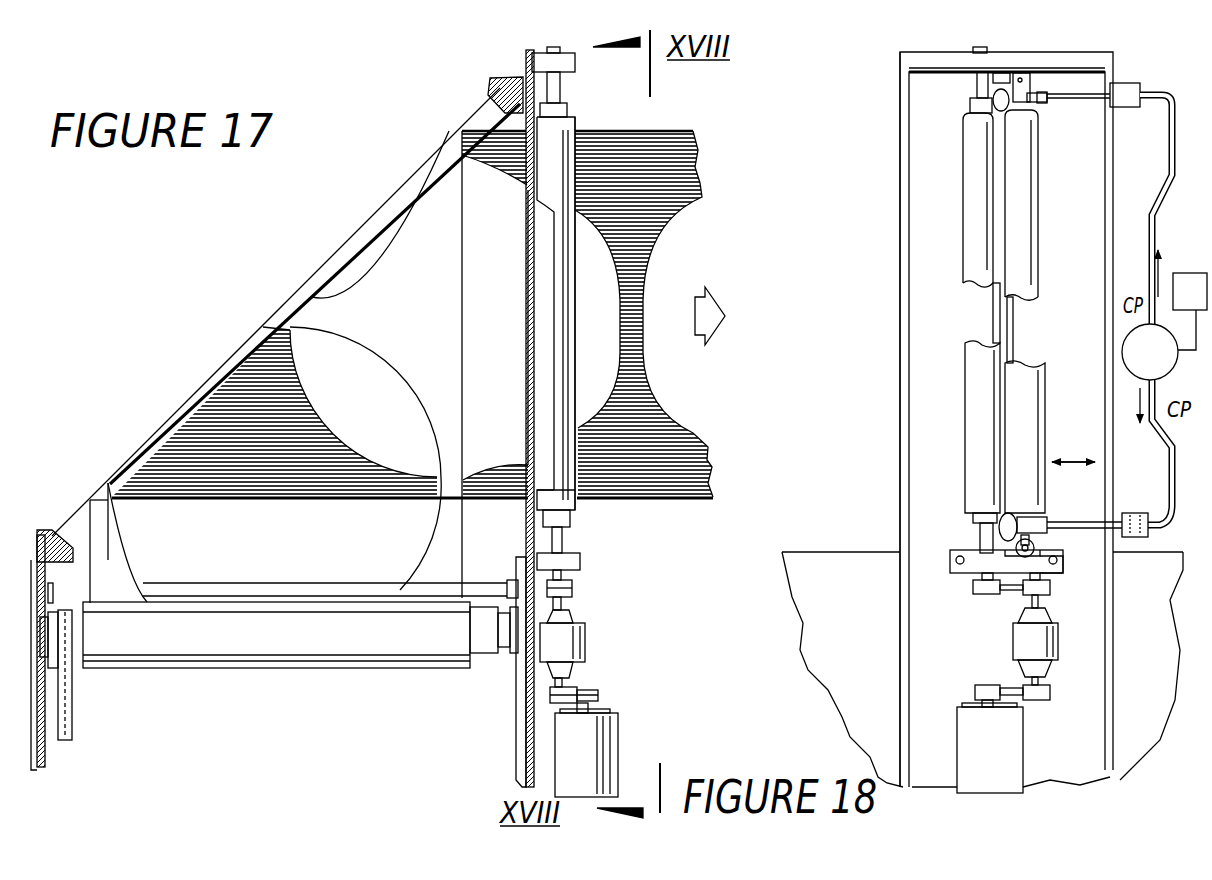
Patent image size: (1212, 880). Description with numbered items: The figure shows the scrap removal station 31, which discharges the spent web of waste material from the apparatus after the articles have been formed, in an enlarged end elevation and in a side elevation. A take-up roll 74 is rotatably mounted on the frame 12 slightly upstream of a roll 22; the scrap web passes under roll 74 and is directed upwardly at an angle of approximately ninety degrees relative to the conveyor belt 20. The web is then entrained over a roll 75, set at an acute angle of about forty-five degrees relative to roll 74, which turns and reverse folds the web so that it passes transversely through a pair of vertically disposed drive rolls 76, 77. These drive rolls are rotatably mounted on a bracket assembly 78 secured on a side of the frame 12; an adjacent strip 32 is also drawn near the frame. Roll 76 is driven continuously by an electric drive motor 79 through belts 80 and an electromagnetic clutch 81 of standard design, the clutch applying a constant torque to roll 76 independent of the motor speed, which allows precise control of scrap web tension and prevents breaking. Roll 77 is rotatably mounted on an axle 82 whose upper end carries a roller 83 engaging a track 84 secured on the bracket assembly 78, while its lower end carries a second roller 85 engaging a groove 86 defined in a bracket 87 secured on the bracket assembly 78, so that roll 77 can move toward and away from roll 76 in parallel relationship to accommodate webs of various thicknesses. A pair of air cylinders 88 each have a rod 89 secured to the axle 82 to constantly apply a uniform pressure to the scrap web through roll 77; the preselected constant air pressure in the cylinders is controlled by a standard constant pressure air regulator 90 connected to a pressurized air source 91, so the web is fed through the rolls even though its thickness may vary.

In FIG. 17, the frame 12 is at (48, 748).
In FIG. 18, the frame 12 is at (847, 550).
In FIG. 17, the conveyor belt 20 is at (377, 660).
In FIG. 17, the roll 22 is at (488, 643).
In FIG. 18, the scrap removal station 31 is at (867, 210).
In FIG. 17, the guide strip 32 is at (73, 697).
In FIG. 17, the roll 74 is at (310, 587).
In FIG. 17, the roll 75 is at (215, 388).
In FIG. 17, the drive roll 76 is at (557, 128).
In FIG. 18, the drive roll 76 is at (973, 207).
In FIG. 18, the drive roll 77 is at (1032, 207).
In FIG. 17, the bracket assembly 78 is at (523, 70).
In FIG. 18, the bracket assembly 78 is at (893, 123).
In FIG. 17, the electric drive motor 79 is at (632, 744).
In FIG. 18, the electric drive motor 79 is at (973, 779).
In FIG. 17, the belts 80 is at (573, 590).
In FIG. 18, the belts 80 is at (1010, 690).
In FIG. 17, the electromagnetic clutch 81 is at (592, 637).
In FIG. 18, the electromagnetic clutch 81 is at (1058, 665).
In FIG. 18, the axle 82 is at (1028, 107).
In FIG. 18, the roller 83 is at (1017, 77).
In FIG. 18, the track 84 is at (1050, 70).
In FIG. 18, the second roller 85 is at (1036, 547).
In FIG. 18, the groove 86 is at (1045, 560).
In FIG. 18, the bracket 87 is at (968, 553).
In FIG. 18, the air cylinders 88 is at (1142, 82).
In FIG. 18, the rod 89 is at (1088, 522).
In FIG. 18, the constant pressure air regulator 90 is at (1122, 340).
In FIG. 18, the pressurized air source 91 is at (1197, 273).